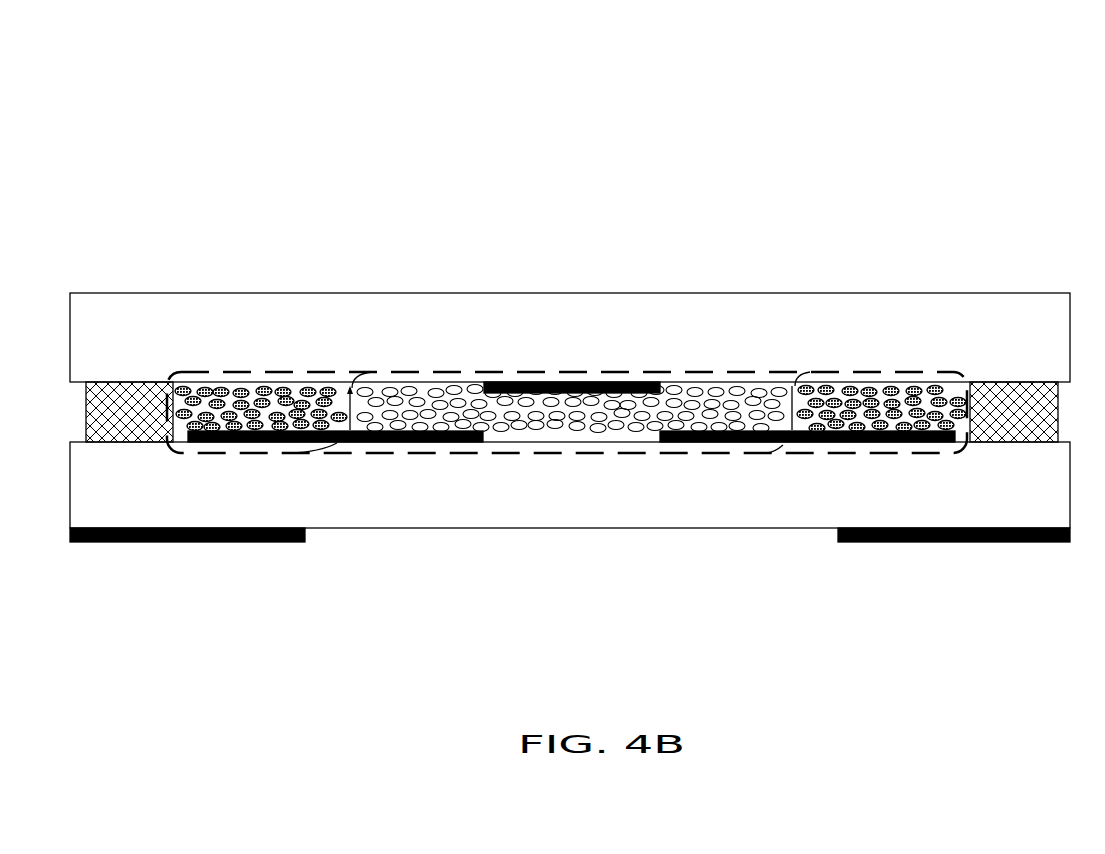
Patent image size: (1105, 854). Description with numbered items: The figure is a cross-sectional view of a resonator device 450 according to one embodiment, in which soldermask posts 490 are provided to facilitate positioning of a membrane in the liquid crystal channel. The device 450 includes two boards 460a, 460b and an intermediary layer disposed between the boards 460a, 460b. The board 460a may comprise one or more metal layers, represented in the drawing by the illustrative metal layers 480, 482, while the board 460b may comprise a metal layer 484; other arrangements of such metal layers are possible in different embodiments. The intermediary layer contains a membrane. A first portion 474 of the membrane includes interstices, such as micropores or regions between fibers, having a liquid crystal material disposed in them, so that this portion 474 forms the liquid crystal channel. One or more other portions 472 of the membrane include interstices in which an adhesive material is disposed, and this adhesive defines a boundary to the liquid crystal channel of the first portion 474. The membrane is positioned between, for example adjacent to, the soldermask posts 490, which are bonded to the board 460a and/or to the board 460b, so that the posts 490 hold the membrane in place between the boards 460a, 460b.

The resonator device 450 is at (190, 105).
The board 460a is at (1063, 516).
The board 460b is at (1063, 349).
The other portions of the membrane 472 is at (320, 372).
The first portion of the membrane 474 is at (658, 372).
The metal layer 480 is at (266, 552).
The metal layer 482 is at (298, 452).
The metal layer 484 is at (586, 370).
The soldermask posts 490 is at (151, 424).